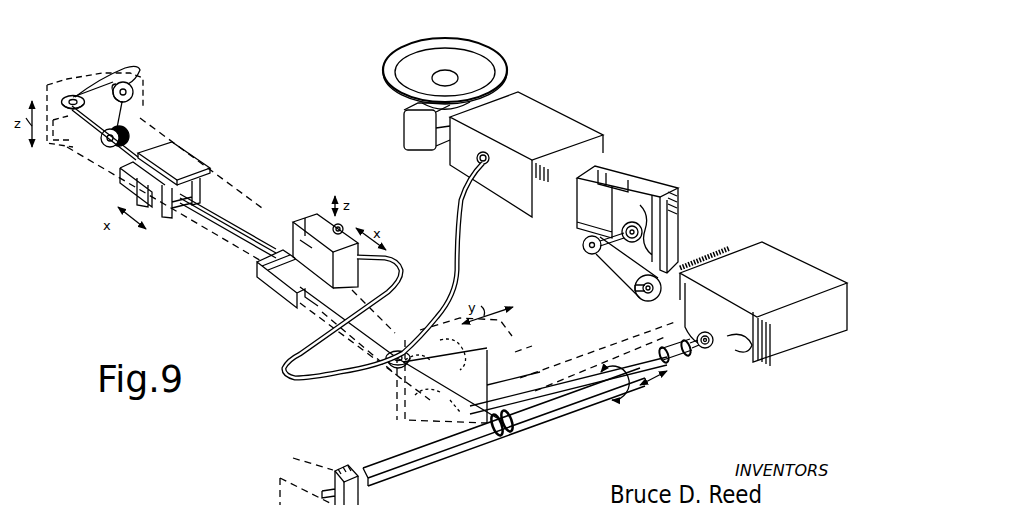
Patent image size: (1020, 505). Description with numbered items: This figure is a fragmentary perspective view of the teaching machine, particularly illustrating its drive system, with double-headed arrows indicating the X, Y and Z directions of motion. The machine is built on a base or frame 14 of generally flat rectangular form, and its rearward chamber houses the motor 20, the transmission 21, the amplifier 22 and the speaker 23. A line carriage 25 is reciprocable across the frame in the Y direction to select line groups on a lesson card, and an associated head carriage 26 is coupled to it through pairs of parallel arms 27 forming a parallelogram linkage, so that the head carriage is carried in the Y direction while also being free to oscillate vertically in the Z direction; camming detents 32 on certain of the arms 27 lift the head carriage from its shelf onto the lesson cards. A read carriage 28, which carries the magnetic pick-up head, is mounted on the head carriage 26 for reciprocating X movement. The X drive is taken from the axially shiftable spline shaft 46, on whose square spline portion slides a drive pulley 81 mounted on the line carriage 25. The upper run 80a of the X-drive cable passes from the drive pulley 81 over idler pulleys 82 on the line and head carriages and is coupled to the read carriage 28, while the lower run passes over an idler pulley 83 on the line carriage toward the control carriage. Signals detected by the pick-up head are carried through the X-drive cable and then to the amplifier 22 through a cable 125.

The frame 14 is at (312, 466).
The motor 20 is at (645, 163).
The transmission 21 is at (770, 282).
The amplifier 22 is at (563, 123).
The speaker 23 is at (493, 68).
The line carriage 25 is at (522, 352).
The head carriage 26 is at (66, 78).
The parallel arms 27 is at (397, 400).
The read carriage 28 is at (171, 160).
The camming detents 32 is at (500, 382).
The spline shaft 46 is at (430, 466).
The upper run of the X-drive cable 80a is at (227, 234).
The drive pulley 81 is at (511, 436).
The idler pulleys 82 is at (132, 72).
The idler pulley 83 is at (131, 134).
The cable 125 is at (466, 232).